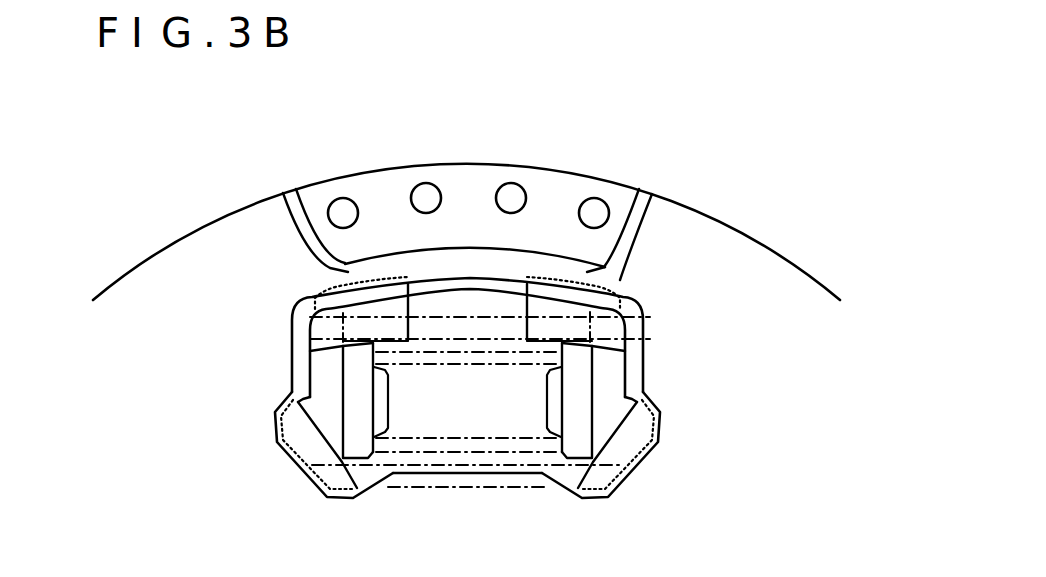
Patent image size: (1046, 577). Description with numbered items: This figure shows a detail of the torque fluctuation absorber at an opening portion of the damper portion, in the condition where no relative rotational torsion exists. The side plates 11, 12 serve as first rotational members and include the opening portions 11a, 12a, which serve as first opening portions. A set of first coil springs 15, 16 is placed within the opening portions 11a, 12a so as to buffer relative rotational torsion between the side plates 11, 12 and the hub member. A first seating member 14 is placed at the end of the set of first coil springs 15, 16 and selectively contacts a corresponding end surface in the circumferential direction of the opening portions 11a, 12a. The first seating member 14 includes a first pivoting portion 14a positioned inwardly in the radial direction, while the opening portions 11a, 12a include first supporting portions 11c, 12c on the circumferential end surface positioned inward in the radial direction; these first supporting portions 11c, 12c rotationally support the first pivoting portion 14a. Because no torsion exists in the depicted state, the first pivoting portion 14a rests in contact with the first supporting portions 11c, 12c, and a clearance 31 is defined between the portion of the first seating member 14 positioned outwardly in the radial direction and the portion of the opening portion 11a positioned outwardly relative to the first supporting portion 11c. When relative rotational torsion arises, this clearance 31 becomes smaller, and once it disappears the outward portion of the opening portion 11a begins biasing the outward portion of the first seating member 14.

The side plate 11 is at (468, 232).
The side plate 12 is at (733, 245).
The opening portion 11a is at (480, 223).
The opening portion 12a is at (466, 288).
The first supporting portion 11c is at (547, 444).
The first supporting portion 12c is at (617, 452).
The first seating member 14 is at (603, 330).
The first pivoting portion 14a is at (633, 413).
The first coil spring 15 is at (488, 315).
The first coil spring 16 is at (440, 343).
The clearance 31 is at (303, 342).